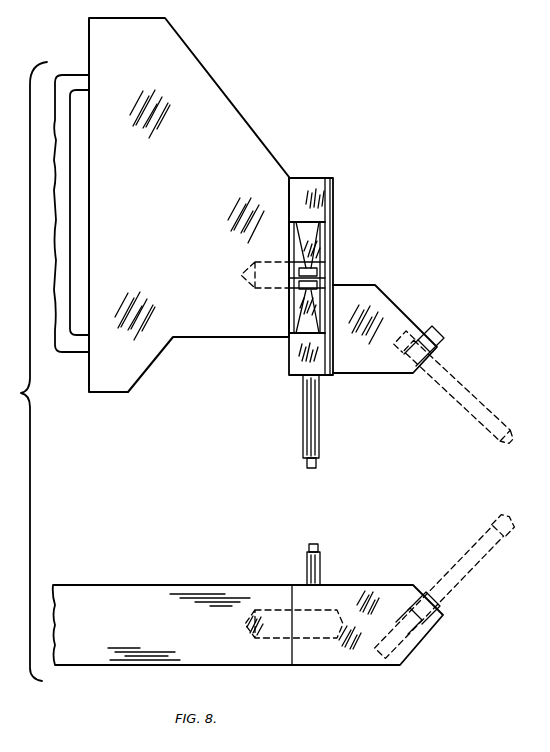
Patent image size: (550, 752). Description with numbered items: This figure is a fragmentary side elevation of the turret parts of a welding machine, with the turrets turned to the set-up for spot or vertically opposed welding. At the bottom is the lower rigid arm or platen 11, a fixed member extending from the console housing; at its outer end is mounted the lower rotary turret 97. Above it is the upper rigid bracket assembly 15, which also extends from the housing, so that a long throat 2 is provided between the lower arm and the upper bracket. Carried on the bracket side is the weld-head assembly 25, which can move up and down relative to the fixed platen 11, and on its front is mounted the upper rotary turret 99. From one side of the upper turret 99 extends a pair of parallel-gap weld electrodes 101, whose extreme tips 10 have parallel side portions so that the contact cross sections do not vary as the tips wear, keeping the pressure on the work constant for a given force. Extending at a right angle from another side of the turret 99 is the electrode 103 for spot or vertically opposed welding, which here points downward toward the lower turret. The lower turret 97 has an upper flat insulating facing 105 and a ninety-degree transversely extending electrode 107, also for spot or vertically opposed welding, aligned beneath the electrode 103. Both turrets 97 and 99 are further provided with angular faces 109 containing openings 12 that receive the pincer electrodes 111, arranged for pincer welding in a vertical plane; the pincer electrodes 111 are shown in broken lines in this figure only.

The throat 2 is at (94, 486).
The extreme tips 10 is at (318, 270).
The lower rigid arm or platen 11 is at (168, 585).
The openings 12 is at (426, 342).
The upper rigid bracket assembly 15 is at (75, 356).
The weld-head assembly 25 is at (232, 96).
The lower rotary turret 97 is at (402, 660).
The upper rotary turret 99 is at (378, 305).
The parallel-gap weld electrodes 101 is at (306, 246).
The electrode 103 is at (307, 411).
The upper flat insulating facing 105 is at (358, 590).
The transversely extending electrode 107 is at (310, 566).
The angular faces 109 is at (419, 372).
The pincer electrodes 111 is at (466, 384).